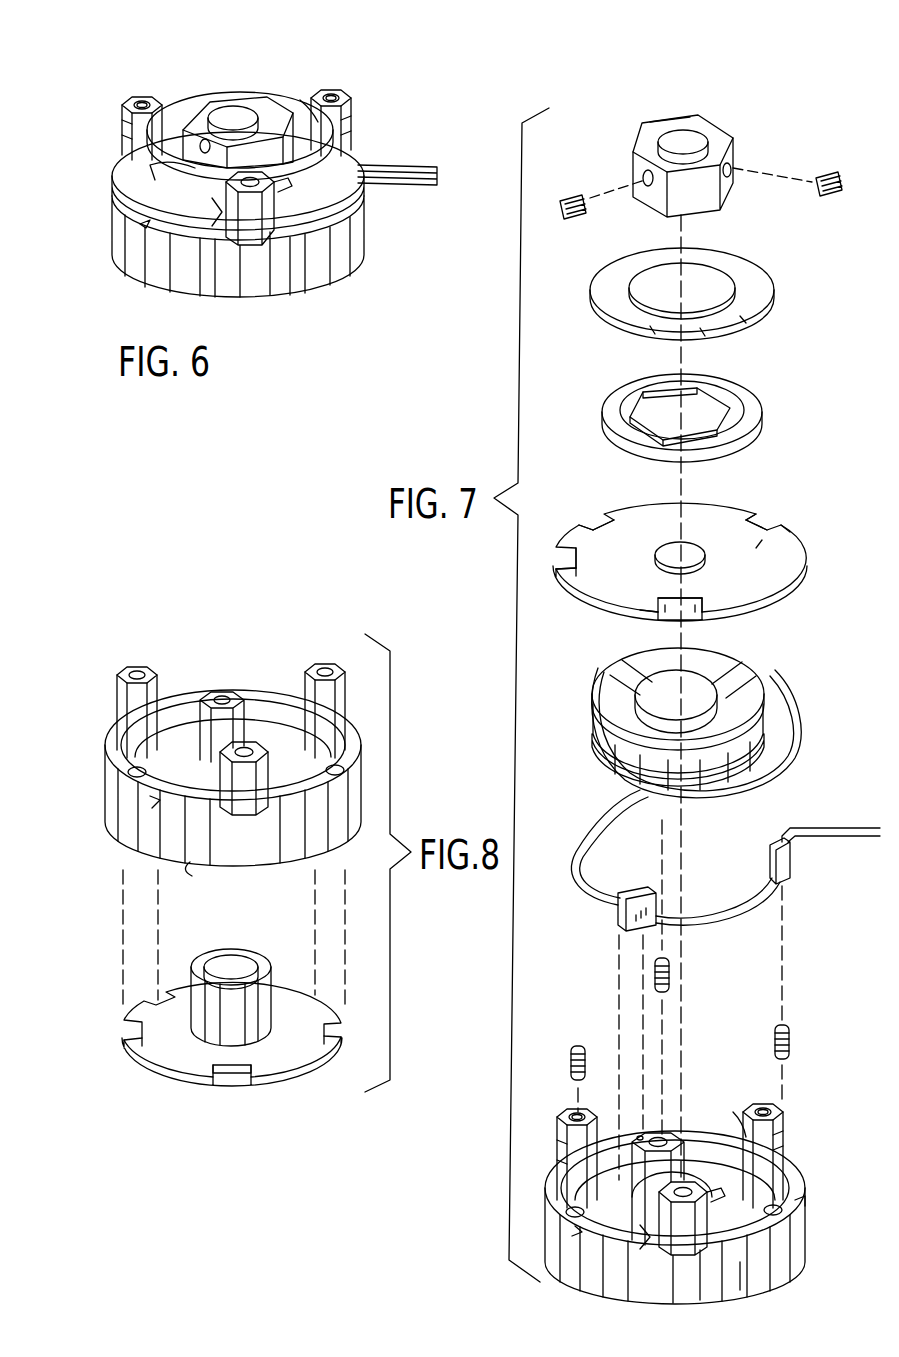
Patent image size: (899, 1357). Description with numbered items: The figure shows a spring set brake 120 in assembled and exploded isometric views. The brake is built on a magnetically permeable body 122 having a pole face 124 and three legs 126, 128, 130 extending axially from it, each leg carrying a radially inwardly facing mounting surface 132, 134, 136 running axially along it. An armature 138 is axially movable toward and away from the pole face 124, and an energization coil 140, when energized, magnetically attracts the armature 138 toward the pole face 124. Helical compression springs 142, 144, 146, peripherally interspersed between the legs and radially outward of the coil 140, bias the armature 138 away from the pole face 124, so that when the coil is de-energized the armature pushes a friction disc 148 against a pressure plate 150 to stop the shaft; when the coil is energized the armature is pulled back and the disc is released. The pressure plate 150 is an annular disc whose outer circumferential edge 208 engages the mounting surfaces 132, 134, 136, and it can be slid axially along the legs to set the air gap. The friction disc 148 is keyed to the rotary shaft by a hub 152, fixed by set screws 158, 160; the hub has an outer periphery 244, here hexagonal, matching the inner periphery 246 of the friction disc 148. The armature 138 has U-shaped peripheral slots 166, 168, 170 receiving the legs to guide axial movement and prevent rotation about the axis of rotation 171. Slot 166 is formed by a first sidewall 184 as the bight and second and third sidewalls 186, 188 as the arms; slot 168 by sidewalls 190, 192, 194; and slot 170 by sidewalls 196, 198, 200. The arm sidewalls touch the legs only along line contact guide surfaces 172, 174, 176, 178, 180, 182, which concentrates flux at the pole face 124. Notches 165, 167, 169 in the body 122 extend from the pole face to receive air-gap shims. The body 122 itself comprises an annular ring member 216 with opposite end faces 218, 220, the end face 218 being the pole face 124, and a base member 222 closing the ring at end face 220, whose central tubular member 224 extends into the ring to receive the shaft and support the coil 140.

In FIG. 6, the spring set brake 120 is at (400, 133).
In FIG. 6, the magnetically permeable body 122 is at (322, 272).
In FIG. 7, the magnetically permeable body 122 is at (790, 1262).
In FIG. 6, the pole face 124 is at (278, 242).
In FIG. 7, the pole face 124 is at (742, 1266).
In FIG. 8, the pole face 124 is at (190, 797).
In FIG. 6, the leg 126 is at (341, 110).
In FIG. 7, the leg 126 is at (786, 1115).
In FIG. 8, the leg 126 is at (331, 668).
In FIG. 6, the leg 128 is at (250, 210).
In FIG. 7, the leg 128 is at (680, 1232).
In FIG. 8, the leg 128 is at (248, 790).
In FIG. 6, the leg 130 is at (130, 102).
In FIG. 7, the leg 130 is at (565, 1116).
In FIG. 8, the leg 130 is at (127, 672).
In FIG. 6, the mounting surface 132 is at (304, 103).
In FIG. 7, the mounting surface 132 is at (738, 1104).
In FIG. 6, the mounting surface 134 is at (205, 176).
In FIG. 7, the mounting surface 134 is at (653, 1142).
In FIG. 6, the mounting surface 136 is at (183, 96).
In FIG. 7, the mounting surface 136 is at (615, 1115).
In FIG. 6, the armature 138 is at (345, 198).
In FIG. 7, the armature 138 is at (808, 592).
In FIG. 7, the energization coil 140 is at (597, 742).
In FIG. 7, the helical compression spring 142 is at (796, 1044).
In FIG. 7, the helical compression spring 144 is at (571, 1055).
In FIG. 7, the helical compression spring 146 is at (671, 975).
In FIG. 7, the friction disc 148 is at (762, 428).
In FIG. 7, the pressure plate 150 is at (775, 286).
In FIG. 6, the hub 152 is at (240, 95).
In FIG. 7, the hub 152 is at (735, 140).
In FIG. 7, the set screw 158 is at (838, 176).
In FIG. 7, the set screw 160 is at (575, 196).
In FIG. 7, the notch 165 is at (790, 1206).
In FIG. 7, the peripheral slot 166 is at (782, 530).
In FIG. 7, the notch 167 is at (576, 1228).
In FIG. 7, the peripheral slot 168 is at (700, 620).
In FIG. 7, the notch 169 is at (655, 1132).
In FIG. 7, the peripheral slot 170 is at (574, 530).
In FIG. 7, the axis of rotation 171 is at (690, 482).
In FIG. 6, the line contact guide surface 172 is at (325, 94).
In FIG. 7, the line contact guide surface 172 is at (758, 1107).
In FIG. 6, the line contact guide surface 174 is at (352, 120).
In FIG. 7, the line contact guide surface 174 is at (788, 1132).
In FIG. 6, the line contact guide surface 176 is at (282, 184).
In FIG. 7, the line contact guide surface 176 is at (715, 1200).
In FIG. 6, the line contact guide surface 178 is at (222, 212).
In FIG. 7, the line contact guide surface 178 is at (640, 1238).
In FIG. 6, the line contact guide surface 180 is at (124, 133).
In FIG. 7, the line contact guide surface 180 is at (564, 1163).
In FIG. 6, the line contact guide surface 182 is at (146, 98).
In FIG. 7, the line contact guide surface 182 is at (580, 1110).
In FIG. 7, the first armature sidewall 184 is at (755, 546).
In FIG. 7, the second armature sidewall 186 is at (748, 527).
In FIG. 7, the third armature sidewall 188 is at (808, 556).
In FIG. 7, the first armature sidewall 190 is at (700, 598).
In FIG. 7, the second armature sidewall 192 is at (740, 612).
In FIG. 7, the third armature sidewall 194 is at (632, 613).
In FIG. 7, the first armature sidewall 196 is at (596, 540).
In FIG. 7, the second armature sidewall 198 is at (590, 580).
In FIG. 7, the third armature sidewall 200 is at (613, 522).
In FIG. 7, the outer circumferential edge 208 is at (770, 323).
In FIG. 8, the annular ring member 216 is at (255, 866).
In FIG. 8, the first end face 218 is at (160, 806).
In FIG. 8, the second end face 220 is at (192, 870).
In FIG. 8, the base member 222 is at (243, 1078).
In FIG. 8, the central tubular member 224 is at (248, 1025).
In FIG. 7, the outer periphery 244 is at (668, 116).
In FIG. 7, the inner periphery 246 is at (728, 393).